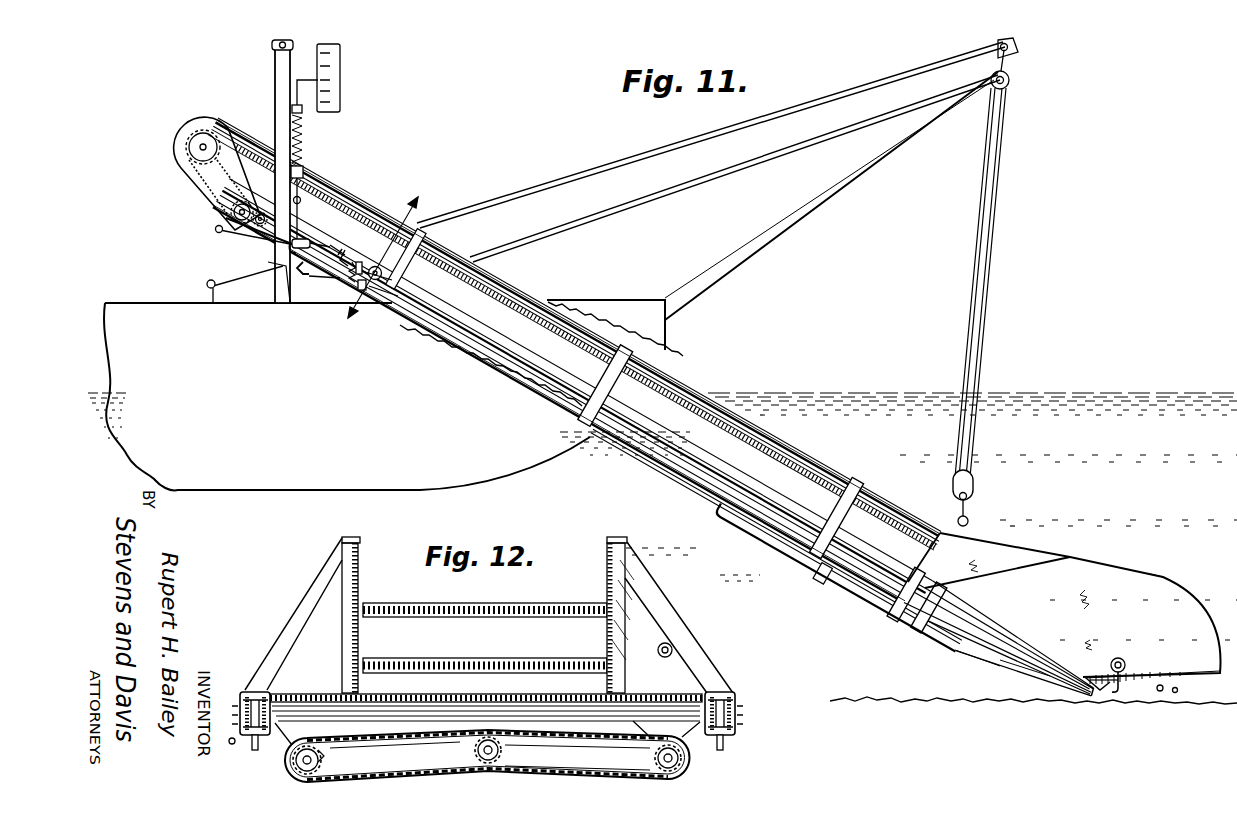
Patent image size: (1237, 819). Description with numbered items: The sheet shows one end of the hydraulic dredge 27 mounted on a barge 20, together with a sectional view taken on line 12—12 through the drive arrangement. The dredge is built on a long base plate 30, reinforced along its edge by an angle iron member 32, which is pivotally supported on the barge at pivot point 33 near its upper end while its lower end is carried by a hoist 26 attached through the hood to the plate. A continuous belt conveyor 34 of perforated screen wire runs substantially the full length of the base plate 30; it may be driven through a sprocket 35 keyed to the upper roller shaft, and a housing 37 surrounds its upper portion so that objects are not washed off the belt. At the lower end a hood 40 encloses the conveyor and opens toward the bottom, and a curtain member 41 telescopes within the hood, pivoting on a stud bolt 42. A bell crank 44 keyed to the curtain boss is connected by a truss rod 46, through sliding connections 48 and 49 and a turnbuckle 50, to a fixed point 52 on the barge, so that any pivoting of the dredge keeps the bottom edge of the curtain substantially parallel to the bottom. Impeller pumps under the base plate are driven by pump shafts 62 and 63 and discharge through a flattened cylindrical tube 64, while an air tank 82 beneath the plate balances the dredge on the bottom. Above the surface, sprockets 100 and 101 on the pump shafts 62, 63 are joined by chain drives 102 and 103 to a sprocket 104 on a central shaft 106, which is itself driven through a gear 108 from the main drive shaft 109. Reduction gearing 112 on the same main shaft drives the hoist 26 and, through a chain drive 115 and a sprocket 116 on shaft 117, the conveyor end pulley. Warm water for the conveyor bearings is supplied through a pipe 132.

In FIG. 11, the barge 20 is at (150, 294).
In FIG. 11, the hoist 26 is at (1017, 122).
In FIG. 11, the dredge 27 is at (1173, 566).
In FIG. 12, the base plate 30 is at (670, 694).
In FIG. 11, the angle iron member 32 is at (690, 432).
In FIG. 11, the pivot point 33 is at (224, 226).
In FIG. 12, the continuous belt conveyor 34 is at (560, 603).
In FIG. 11, the sprocket 35 is at (262, 138).
In FIG. 11, the housing 37 is at (790, 450).
In FIG. 11, the hood 40 is at (1118, 576).
In FIG. 11, the curtain member 41 is at (1156, 694).
In FIG. 11, the stud bolt 42 is at (1128, 656).
In FIG. 11, the bell crank 44 is at (1108, 702).
In FIG. 11, the truss rod 46 is at (953, 646).
In FIG. 11, the sliding connection 48 is at (380, 290).
In FIG. 12, the sliding connection 48 is at (238, 732).
In FIG. 12, the sliding connection 49 is at (742, 722).
In FIG. 11, the turnbuckle 50 is at (290, 246).
In FIG. 11, the fixed point 52 is at (236, 236).
In FIG. 11, the pump shaft 62 is at (694, 474).
In FIG. 12, the pump shaft 62 is at (296, 760).
In FIG. 12, the pump shaft 63 is at (658, 758).
In FIG. 11, the cylindrical tube 64 is at (996, 660).
In FIG. 11, the air tank 82 is at (796, 552).
In FIG. 11, the sprocket 100 is at (342, 278).
In FIG. 12, the sprocket 100 is at (330, 758).
In FIG. 12, the sprocket 101 is at (690, 758).
In FIG. 12, the chain drive 102 is at (384, 738).
In FIG. 12, the chain drive 103 is at (580, 746).
In FIG. 12, the sprocket 104 is at (504, 758).
In FIG. 11, the central shaft 106 is at (326, 246).
In FIG. 12, the central shaft 106 is at (472, 750).
In FIG. 12, the gear 108 is at (502, 753).
In FIG. 11, the main drive shaft 109 is at (262, 212).
In FIG. 11, the reduction gearing 112 is at (228, 210).
In FIG. 11, the chain drive 115 is at (210, 180).
In FIG. 11, the sprocket 116 is at (190, 147).
In FIG. 11, the shaft 117 is at (188, 131).
In FIG. 12, the pipe 132 is at (671, 645).
In FIG. 11, the section line 12— 12 is at (368, 254).